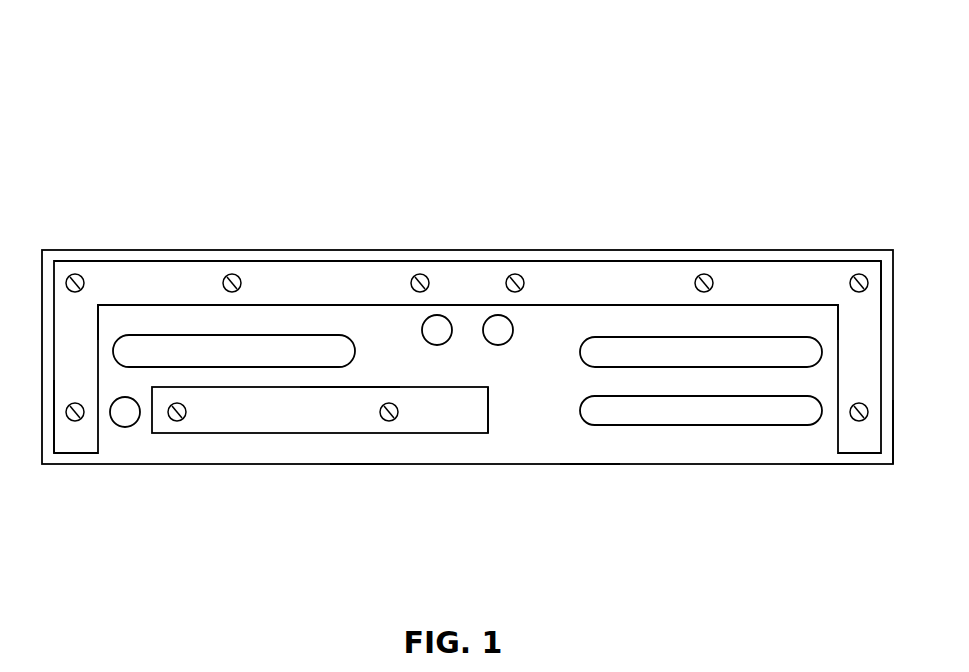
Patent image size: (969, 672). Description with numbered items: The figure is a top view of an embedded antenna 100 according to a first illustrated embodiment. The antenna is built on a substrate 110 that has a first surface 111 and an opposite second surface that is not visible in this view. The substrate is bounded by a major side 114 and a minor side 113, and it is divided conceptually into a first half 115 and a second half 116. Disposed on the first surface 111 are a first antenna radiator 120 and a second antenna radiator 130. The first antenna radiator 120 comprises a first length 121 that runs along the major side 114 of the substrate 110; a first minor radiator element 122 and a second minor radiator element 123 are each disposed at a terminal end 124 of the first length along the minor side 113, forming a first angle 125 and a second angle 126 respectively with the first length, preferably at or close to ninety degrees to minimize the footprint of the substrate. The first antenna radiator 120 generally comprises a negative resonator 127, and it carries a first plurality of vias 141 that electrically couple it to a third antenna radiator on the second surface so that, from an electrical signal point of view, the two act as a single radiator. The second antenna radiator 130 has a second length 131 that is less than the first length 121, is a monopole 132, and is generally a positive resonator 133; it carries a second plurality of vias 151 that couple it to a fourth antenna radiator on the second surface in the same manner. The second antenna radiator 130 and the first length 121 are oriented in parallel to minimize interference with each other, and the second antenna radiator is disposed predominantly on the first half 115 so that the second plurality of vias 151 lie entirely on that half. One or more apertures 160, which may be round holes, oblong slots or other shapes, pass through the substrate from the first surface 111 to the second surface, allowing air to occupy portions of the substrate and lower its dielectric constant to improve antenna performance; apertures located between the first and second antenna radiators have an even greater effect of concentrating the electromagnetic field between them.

The embedded antenna 100 is at (108, 63).
The substrate 110 is at (680, 438).
The first surface 111 is at (592, 445).
The minor side 113 is at (893, 427).
The major side 114 is at (683, 250).
The first half 115 is at (360, 443).
The second half 116 is at (825, 438).
The first antenna radiator 120 is at (492, 255).
The first length 121 is at (54, 172).
The first minor radiator element 122 is at (62, 420).
The second minor radiator element 123 is at (890, 268).
The terminal end 124 is at (63, 262).
The first angle 125 is at (100, 315).
The second angle 126 is at (825, 318).
The negative resonator 127 is at (597, 270).
The second antenna radiator 130 is at (292, 437).
The second length 131 is at (152, 543).
The monopole 132 is at (362, 398).
The positive resonator 133 is at (483, 442).
The first plurality of vias 141 is at (235, 275).
The second plurality of vias 151 is at (178, 417).
The one or more apertures 160 is at (323, 335).